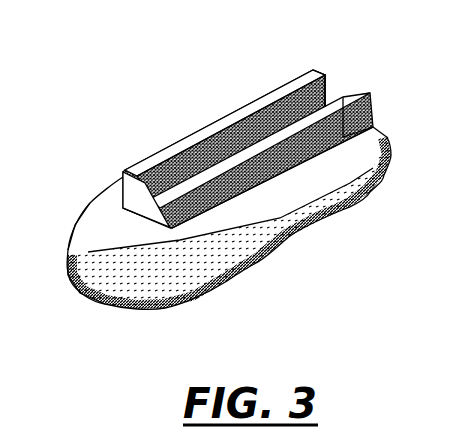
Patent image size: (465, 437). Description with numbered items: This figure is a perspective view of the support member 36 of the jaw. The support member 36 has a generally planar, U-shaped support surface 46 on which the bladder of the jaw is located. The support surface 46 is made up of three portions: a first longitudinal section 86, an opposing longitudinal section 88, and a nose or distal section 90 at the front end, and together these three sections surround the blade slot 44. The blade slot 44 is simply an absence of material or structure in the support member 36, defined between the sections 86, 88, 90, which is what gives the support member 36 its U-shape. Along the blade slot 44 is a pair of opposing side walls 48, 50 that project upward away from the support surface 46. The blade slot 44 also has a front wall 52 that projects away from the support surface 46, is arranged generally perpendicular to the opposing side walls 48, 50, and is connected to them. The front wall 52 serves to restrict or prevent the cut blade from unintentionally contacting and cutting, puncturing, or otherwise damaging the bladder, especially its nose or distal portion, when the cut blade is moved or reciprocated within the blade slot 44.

The support member 36 is at (147, 311).
The blade slot 44 is at (276, 122).
The support surface 46 is at (165, 238).
The side wall 48 is at (253, 101).
The side wall 50 is at (347, 99).
The front wall 52 is at (150, 162).
The first longitudinal section 86 is at (268, 200).
The opposing longitudinal section 88 is at (110, 237).
The nose or distal section 90 is at (122, 262).